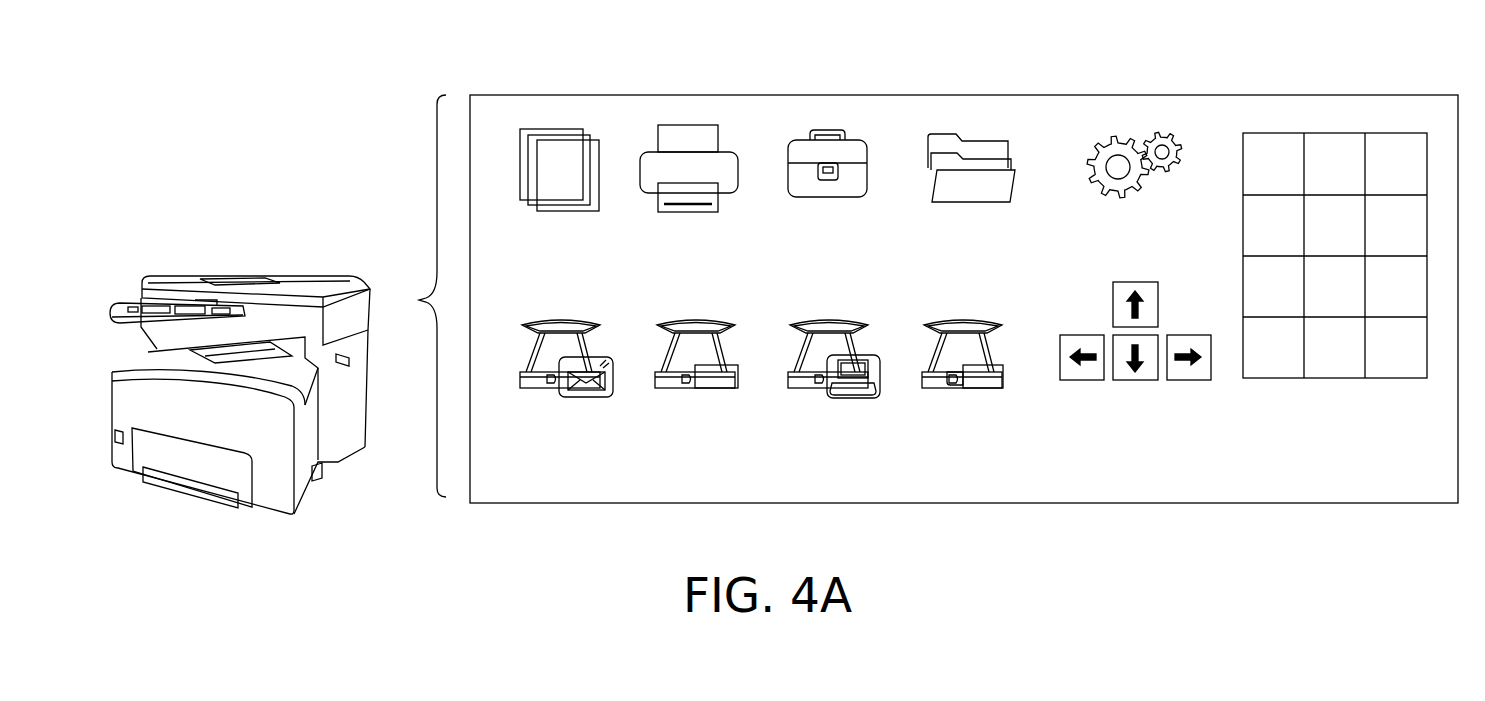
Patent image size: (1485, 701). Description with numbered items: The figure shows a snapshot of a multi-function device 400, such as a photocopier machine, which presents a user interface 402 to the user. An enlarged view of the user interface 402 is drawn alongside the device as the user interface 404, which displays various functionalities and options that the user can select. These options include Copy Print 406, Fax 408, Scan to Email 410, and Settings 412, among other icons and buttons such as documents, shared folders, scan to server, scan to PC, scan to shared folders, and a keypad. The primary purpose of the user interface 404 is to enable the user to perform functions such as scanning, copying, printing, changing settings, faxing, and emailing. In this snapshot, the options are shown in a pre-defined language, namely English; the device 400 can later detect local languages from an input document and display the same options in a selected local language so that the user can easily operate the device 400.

The device 400 is at (258, 365).
The user interface 402 is at (162, 296).
The enlarged view of the user interface 404 is at (963, 95).
The Copy Print option 406 is at (552, 128).
The Fax option 408 is at (689, 123).
The Scan to Email option 410 is at (575, 468).
The Settings option 412 is at (1105, 120).